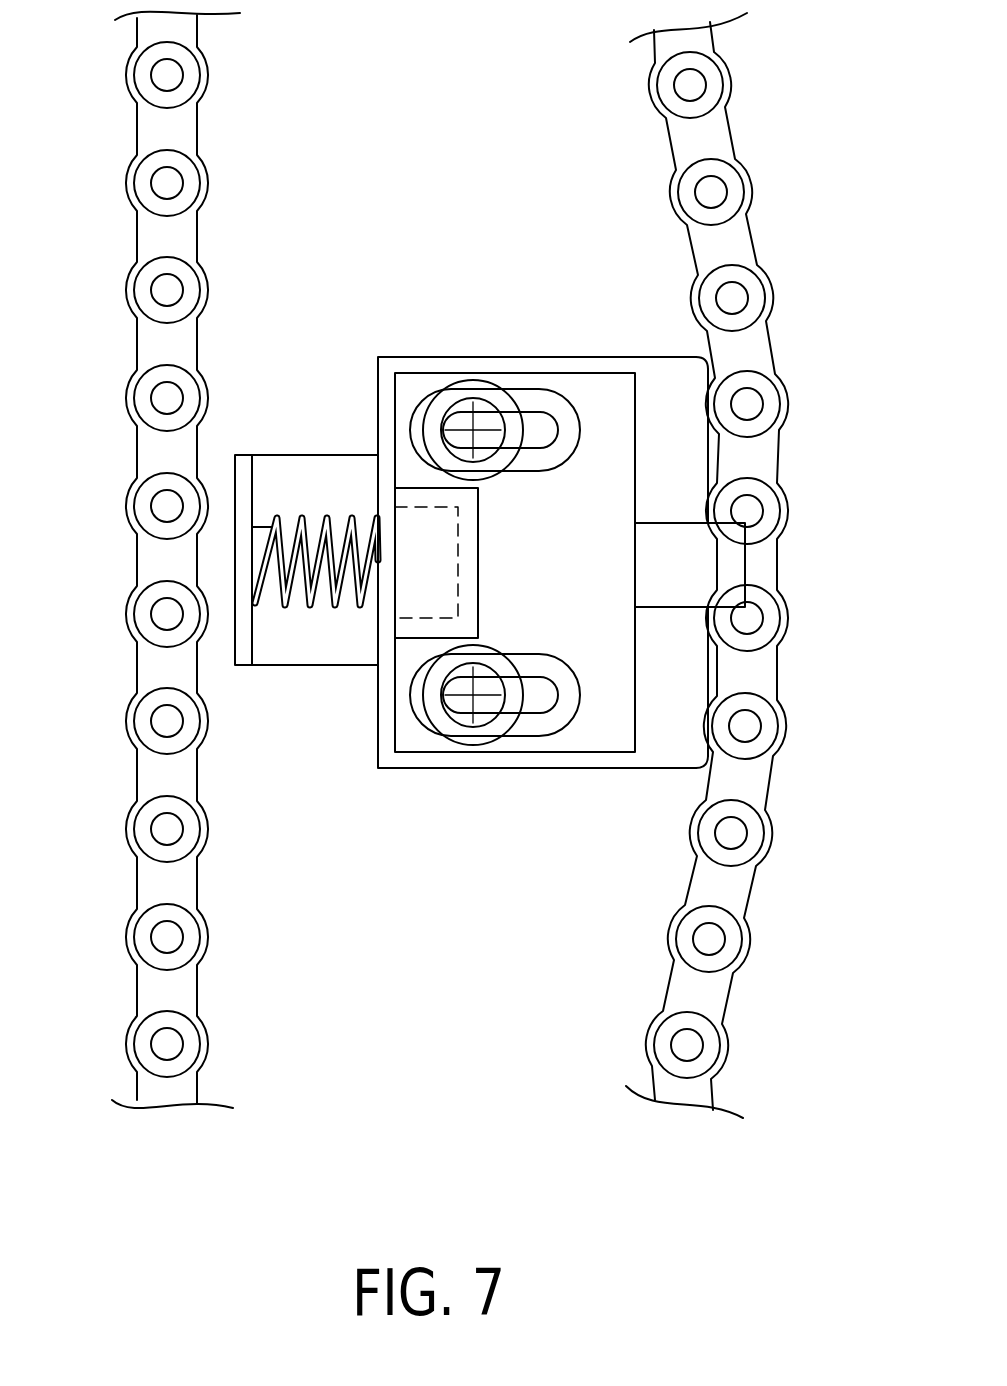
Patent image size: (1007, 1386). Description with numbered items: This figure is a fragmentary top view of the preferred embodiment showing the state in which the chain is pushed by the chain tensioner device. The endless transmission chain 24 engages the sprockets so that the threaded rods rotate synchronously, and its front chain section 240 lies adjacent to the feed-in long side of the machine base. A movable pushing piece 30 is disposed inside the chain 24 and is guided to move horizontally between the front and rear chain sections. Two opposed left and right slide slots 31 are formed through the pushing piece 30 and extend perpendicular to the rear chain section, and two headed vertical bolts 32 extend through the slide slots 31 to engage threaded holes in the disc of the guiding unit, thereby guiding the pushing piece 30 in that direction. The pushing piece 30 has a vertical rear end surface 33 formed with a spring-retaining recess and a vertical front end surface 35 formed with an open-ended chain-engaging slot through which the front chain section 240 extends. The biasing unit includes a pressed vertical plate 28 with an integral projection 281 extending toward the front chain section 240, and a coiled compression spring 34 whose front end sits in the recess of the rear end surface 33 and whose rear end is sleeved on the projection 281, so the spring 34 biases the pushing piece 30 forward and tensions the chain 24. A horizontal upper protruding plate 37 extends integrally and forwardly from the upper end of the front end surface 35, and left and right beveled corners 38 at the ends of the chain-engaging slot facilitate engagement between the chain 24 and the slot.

The endless transmission chain 24 is at (717, 43).
The front chain section 240 is at (718, 138).
The pressed vertical plate 28 is at (243, 457).
The integral projection 281 is at (258, 538).
The movable pushing piece 30 is at (466, 773).
The slide slots 31 is at (535, 420).
The headed vertical bolts 32 is at (453, 420).
The vertical rear end surface 33 is at (410, 630).
The coiled compression spring 34 is at (337, 520).
The vertical front end surface 35 is at (707, 465).
The horizontal upper protruding plate 37 is at (723, 567).
The beveled corners 38 is at (700, 342).